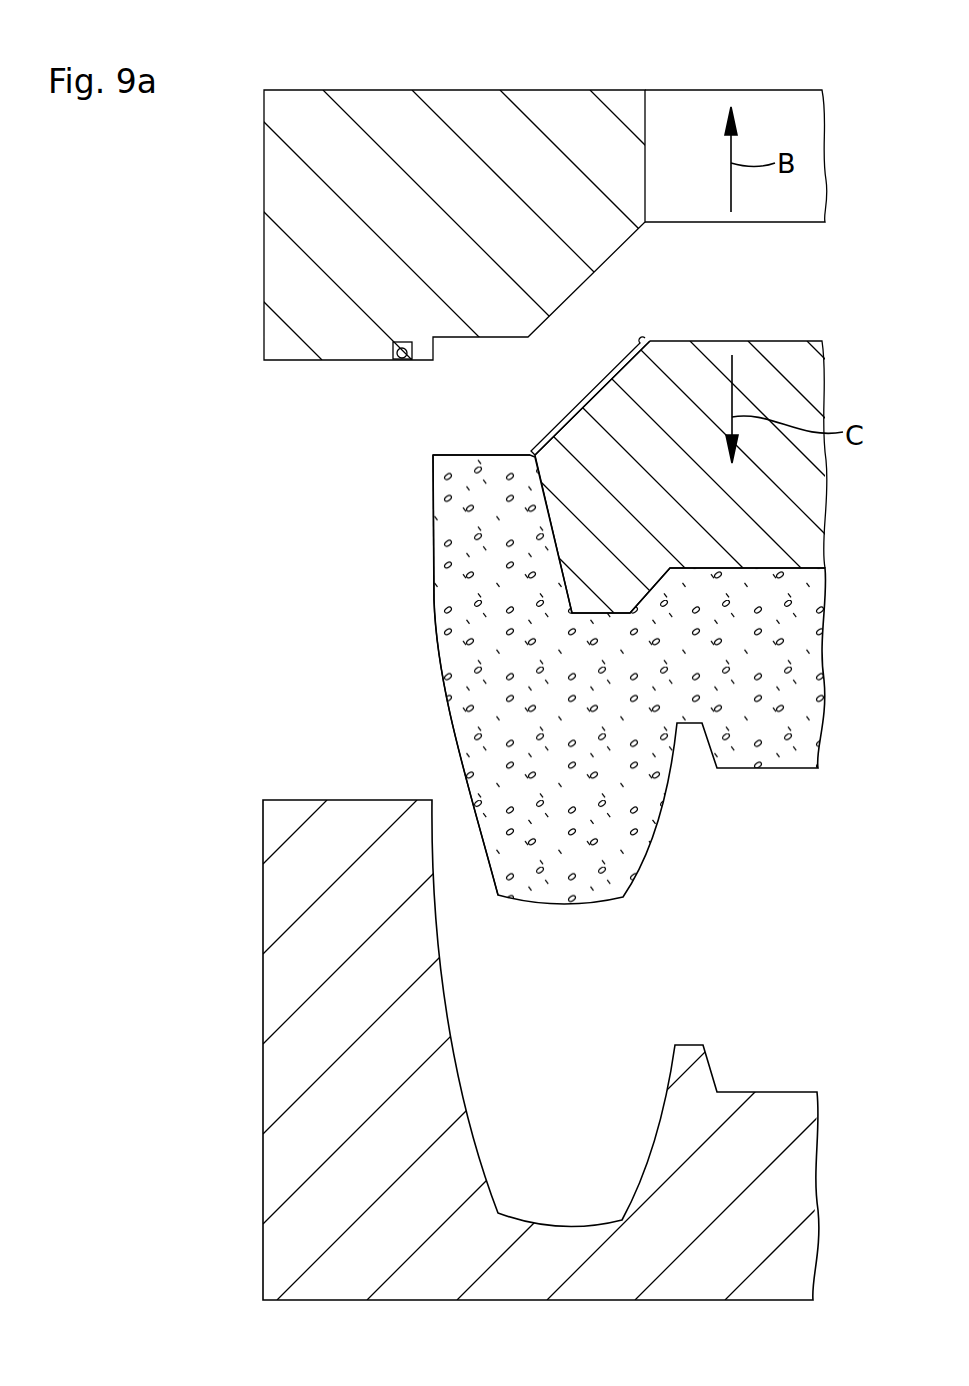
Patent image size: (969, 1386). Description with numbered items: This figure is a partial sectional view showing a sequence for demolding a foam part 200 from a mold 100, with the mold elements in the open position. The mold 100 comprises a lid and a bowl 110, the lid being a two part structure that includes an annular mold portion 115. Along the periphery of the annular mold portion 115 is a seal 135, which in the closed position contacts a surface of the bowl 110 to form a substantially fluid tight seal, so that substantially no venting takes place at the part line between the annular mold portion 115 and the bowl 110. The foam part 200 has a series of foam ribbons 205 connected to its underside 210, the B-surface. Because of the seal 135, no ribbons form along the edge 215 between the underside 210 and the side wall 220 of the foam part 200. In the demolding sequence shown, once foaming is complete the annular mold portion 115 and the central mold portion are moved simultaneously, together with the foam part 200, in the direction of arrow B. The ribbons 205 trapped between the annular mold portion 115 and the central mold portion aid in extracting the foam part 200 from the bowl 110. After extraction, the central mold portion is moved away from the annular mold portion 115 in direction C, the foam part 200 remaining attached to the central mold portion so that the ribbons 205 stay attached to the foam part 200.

The mold 100 is at (205, 92).
The bowl 110 is at (288, 1072).
The annular mold portion 115 is at (293, 108).
The seal 135 is at (402, 360).
The foam part 200 is at (787, 660).
The foam ribbons 205 is at (567, 413).
The underside 210 is at (493, 457).
The edge 215 is at (430, 492).
The side wall 220 is at (430, 625).